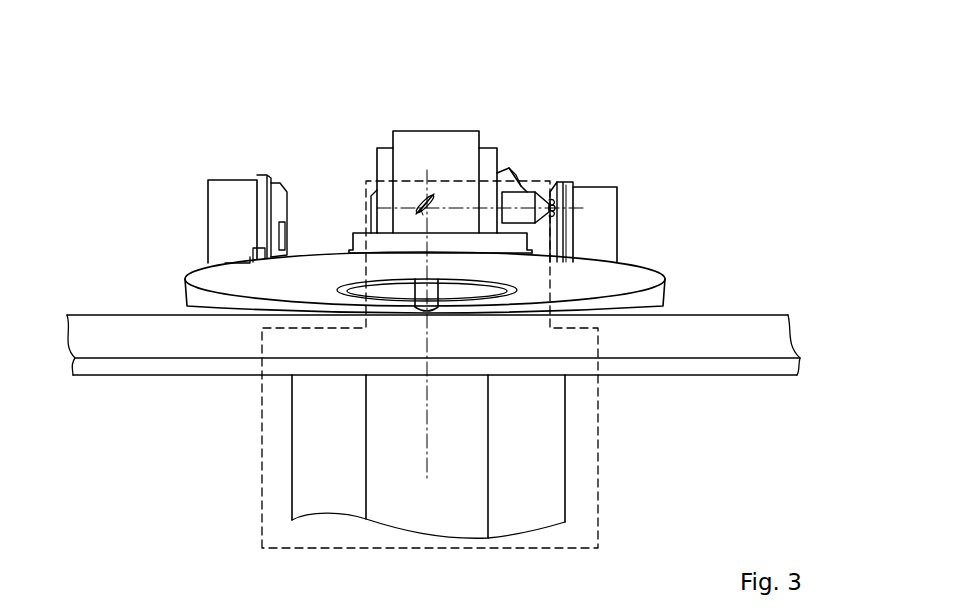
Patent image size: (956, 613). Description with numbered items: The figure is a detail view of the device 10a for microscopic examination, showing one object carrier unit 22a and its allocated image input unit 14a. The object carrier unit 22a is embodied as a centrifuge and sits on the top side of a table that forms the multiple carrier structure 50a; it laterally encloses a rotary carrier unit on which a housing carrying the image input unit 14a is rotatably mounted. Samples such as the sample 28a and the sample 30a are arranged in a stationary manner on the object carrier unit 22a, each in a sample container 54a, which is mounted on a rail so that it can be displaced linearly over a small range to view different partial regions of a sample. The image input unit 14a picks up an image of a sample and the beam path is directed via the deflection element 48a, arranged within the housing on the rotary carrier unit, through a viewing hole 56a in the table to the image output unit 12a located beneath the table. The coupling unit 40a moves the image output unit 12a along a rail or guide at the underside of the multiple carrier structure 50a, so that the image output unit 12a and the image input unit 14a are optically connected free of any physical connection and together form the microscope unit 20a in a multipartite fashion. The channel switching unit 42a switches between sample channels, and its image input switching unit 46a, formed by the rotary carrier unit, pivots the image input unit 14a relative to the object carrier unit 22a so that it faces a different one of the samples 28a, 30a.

The device for microscopic examination 10a is at (138, 132).
The image output unit 12a is at (552, 463).
The image input unit 14a is at (510, 210).
The microscope unit 20a is at (580, 508).
The object carrier unit 22a is at (652, 292).
The sample 28a is at (592, 224).
The sample 30a is at (423, 194).
The coupling unit 40a is at (358, 265).
The channel switching unit 42a is at (315, 152).
The image input switching unit 46a is at (366, 162).
The deflection element 48a is at (418, 198).
The multiple carrier structure 50a is at (740, 359).
The sample container 54a is at (225, 213).
The viewing hole 56a is at (388, 284).